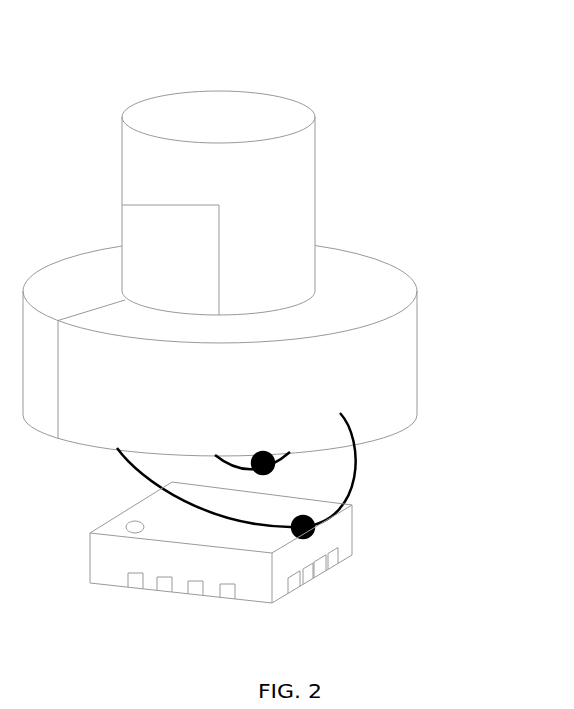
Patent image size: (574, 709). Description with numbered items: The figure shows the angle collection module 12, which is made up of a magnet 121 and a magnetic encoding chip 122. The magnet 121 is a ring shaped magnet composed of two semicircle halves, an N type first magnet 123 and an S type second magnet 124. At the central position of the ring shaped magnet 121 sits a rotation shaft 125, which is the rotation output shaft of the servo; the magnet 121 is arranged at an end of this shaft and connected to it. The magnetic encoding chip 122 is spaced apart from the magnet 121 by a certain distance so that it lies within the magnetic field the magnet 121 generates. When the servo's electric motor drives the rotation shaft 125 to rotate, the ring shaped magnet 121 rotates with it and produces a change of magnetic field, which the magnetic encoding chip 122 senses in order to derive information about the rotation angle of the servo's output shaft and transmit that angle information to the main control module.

The angle collection module 12 is at (231, 46).
The magnet 121 is at (283, 328).
The magnetic encoding chip 122 is at (337, 530).
The first magnet 123 is at (323, 262).
The second magnet 124 is at (368, 300).
The rotation shaft 125 is at (285, 168).